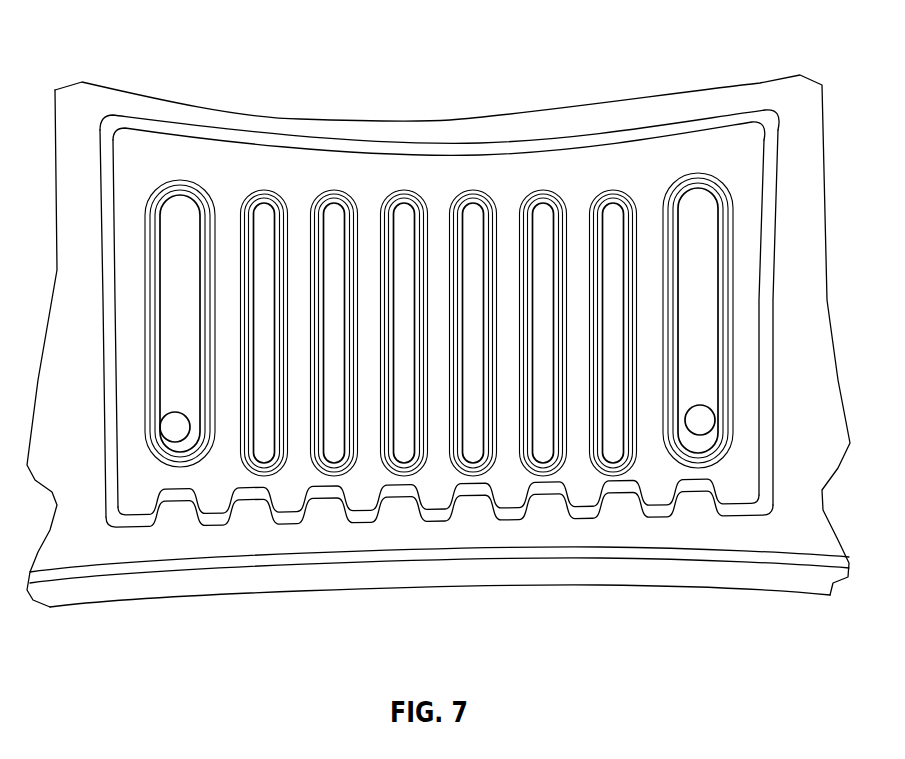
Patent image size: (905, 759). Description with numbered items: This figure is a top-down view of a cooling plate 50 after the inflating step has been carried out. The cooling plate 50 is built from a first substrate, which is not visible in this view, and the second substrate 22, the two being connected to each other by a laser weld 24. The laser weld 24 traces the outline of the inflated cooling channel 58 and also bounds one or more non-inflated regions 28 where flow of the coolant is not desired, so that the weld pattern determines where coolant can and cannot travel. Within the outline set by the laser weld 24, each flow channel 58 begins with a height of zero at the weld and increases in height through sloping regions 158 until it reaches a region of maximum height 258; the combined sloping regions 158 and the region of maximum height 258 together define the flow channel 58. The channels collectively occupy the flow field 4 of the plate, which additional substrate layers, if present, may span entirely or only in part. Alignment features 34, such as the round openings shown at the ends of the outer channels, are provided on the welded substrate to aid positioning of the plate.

The cooling plate 50 is at (100, 62).
The flow field 4 is at (755, 178).
The second substrate 22 is at (330, 533).
The laser weld 24 is at (647, 527).
The non-inflated region 28 is at (615, 450).
The alignment feature 34 is at (720, 415).
The cooling channel 58 is at (510, 503).
The sloping region 158 is at (177, 185).
The region of maximum height 258 is at (578, 165).